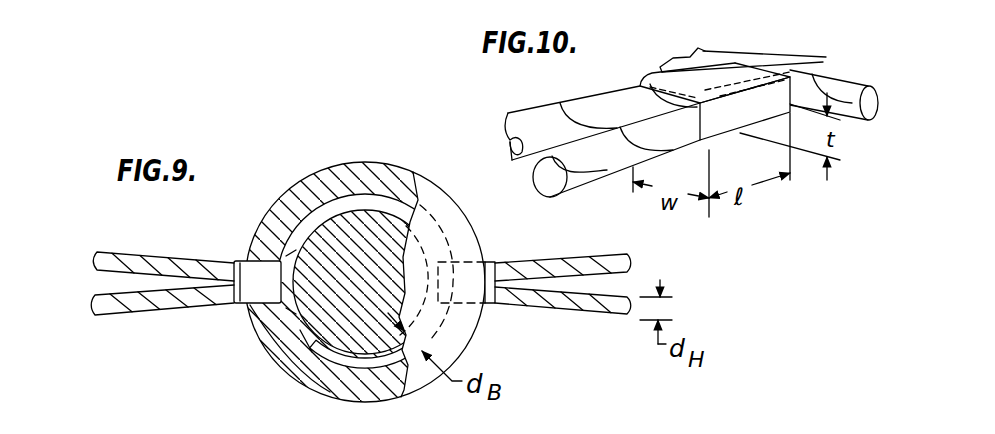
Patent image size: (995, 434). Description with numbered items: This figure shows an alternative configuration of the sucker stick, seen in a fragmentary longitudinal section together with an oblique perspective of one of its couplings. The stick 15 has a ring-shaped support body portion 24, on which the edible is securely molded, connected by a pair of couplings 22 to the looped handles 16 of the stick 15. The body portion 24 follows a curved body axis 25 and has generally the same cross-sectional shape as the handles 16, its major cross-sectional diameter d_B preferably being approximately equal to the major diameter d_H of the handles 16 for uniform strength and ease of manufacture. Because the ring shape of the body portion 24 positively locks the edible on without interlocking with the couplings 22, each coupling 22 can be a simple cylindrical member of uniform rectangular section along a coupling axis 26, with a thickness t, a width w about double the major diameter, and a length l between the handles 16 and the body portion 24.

In FIG. 9, the stick 15 is at (105, 277).
In FIG. 9, the looped handle 16 is at (163, 258).
In FIG. 9, the coupling 22 is at (244, 258).
In FIG. 10, the coupling 22 is at (727, 133).
In FIG. 9, the support body portion 24 is at (300, 188).
In FIG. 9, the curved body axis 25 is at (455, 326).
In FIG. 10, the coupling axis 26 is at (800, 62).